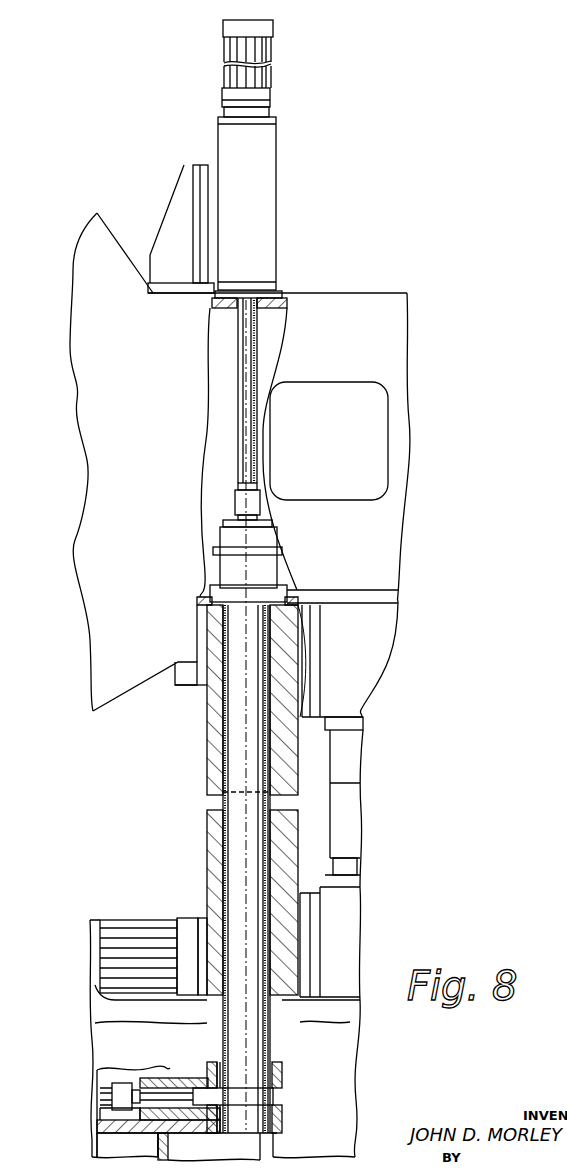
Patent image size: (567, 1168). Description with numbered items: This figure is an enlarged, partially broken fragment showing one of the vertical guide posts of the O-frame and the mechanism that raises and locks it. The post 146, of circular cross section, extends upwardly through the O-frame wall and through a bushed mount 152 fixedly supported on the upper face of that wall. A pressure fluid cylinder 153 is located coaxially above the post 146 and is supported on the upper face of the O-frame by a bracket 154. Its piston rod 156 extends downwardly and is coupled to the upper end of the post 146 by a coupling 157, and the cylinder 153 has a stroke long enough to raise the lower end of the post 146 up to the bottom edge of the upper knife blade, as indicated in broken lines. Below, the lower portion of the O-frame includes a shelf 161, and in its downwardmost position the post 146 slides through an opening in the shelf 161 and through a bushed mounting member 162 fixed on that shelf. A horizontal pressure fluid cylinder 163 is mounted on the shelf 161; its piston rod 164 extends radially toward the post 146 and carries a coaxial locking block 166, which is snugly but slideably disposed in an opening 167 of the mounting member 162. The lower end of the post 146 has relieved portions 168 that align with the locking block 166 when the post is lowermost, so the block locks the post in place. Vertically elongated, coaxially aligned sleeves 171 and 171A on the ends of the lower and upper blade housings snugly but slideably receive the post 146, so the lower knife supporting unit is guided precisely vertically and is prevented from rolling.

The vertical post 146 is at (235, 839).
The bushed mount 152 is at (265, 569).
The pressure fluid cylinder 153 is at (255, 50).
The bracket 154 is at (262, 186).
The piston rod 156 is at (253, 353).
The coupling 157 is at (250, 503).
The shelf 161 is at (219, 1133).
The bushed mounting member 162 is at (177, 1078).
The horizontal pressure fluid cylinder 163 is at (100, 1095).
The piston rod 164 is at (140, 1087).
The locking block 166 is at (233, 1100).
The opening 167 is at (150, 1128).
The relieved portions 168 is at (233, 1091).
The sleeve 171 is at (213, 870).
The sleeve 171A is at (209, 726).